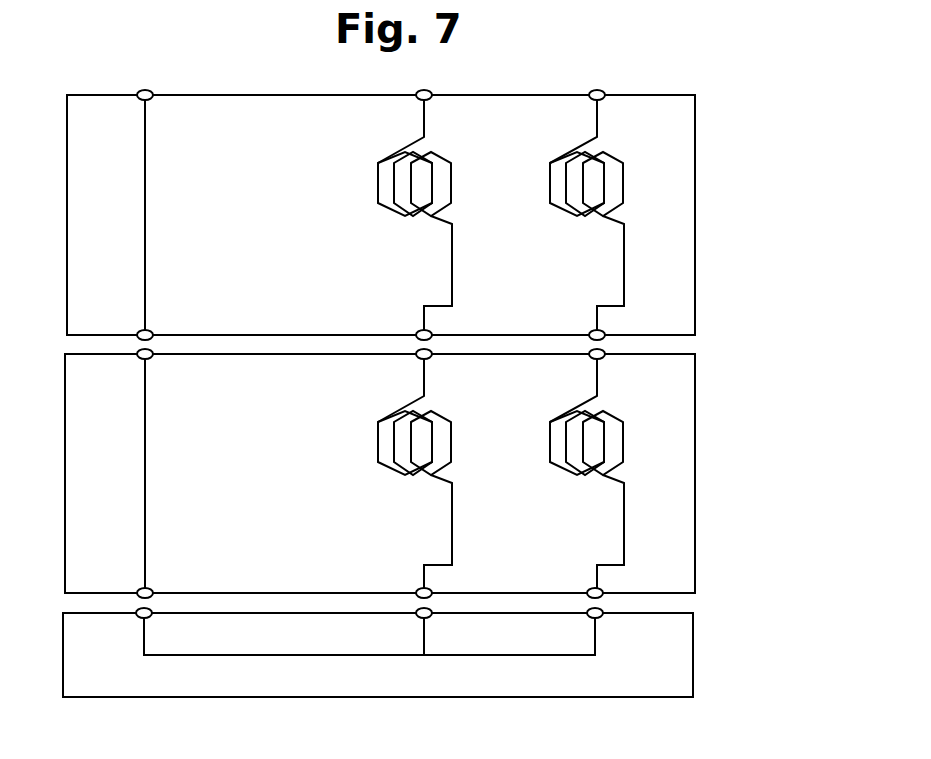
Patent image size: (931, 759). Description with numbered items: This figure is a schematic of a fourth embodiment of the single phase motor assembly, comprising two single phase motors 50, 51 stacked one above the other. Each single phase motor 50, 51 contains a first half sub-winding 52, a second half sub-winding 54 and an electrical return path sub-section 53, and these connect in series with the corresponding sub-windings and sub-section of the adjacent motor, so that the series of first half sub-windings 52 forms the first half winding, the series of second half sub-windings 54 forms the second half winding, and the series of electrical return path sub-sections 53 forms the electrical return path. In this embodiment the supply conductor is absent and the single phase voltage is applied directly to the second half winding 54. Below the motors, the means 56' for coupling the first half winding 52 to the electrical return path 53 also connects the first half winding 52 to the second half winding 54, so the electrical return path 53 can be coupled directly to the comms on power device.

The single phase motor 50 is at (695, 205).
The single phase motor 51 is at (695, 513).
The first half sub-winding 52 is at (393, 153).
The electrical return path sub-section 53 is at (146, 229).
The second half sub-winding 54 is at (576, 150).
The means for coupling 56' is at (451, 655).